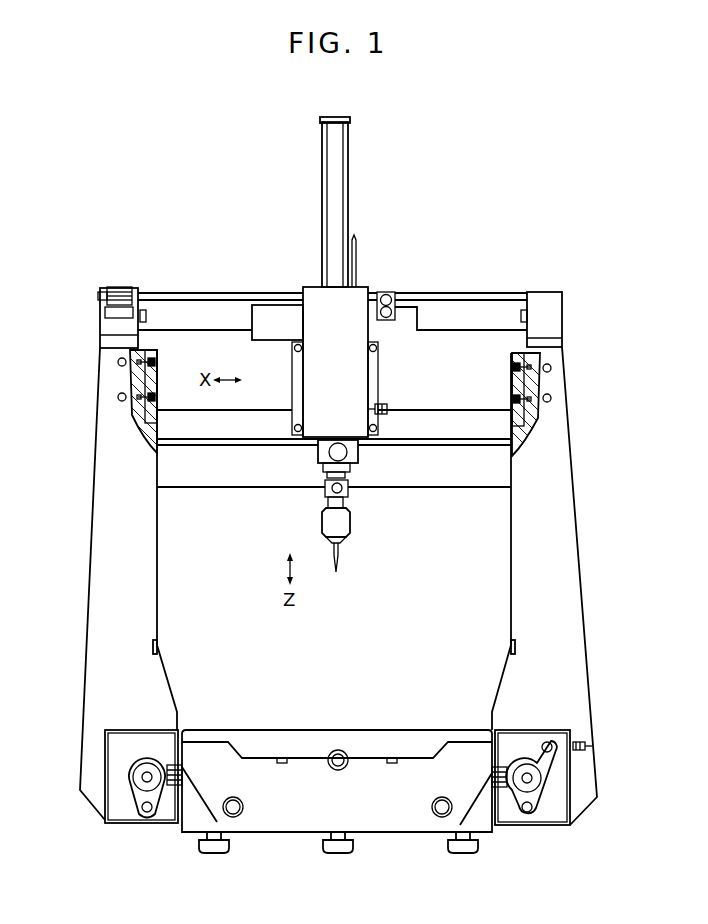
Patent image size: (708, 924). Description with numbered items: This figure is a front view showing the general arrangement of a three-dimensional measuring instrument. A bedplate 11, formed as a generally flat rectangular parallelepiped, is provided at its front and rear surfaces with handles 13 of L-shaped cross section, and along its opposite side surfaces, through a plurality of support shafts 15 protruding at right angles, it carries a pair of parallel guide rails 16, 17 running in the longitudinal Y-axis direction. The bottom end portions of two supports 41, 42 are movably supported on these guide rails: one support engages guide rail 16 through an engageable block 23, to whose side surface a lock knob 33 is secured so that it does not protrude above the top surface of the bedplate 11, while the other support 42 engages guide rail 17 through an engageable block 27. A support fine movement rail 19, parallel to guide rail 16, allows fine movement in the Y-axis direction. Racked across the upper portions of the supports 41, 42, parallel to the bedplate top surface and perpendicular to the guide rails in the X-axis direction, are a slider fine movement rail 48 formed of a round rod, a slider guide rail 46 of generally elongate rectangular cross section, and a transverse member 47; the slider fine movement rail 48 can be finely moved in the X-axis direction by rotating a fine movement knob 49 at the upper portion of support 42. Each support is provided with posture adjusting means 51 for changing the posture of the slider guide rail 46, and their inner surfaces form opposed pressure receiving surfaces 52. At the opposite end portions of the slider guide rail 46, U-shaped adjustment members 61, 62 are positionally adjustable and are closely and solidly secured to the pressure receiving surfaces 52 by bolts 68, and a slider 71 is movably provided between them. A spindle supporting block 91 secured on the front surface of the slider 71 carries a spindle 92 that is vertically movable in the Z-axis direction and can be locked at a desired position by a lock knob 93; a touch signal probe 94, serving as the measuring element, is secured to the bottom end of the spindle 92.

The bedplate 11 is at (352, 730).
The handles 13 is at (400, 815).
The support shafts 15 is at (180, 768).
The guide rail 16 is at (540, 785).
The guide rail 17 is at (140, 787).
The support fine movement rail 19 is at (547, 741).
The engageable block 23 is at (560, 788).
The engageable block 27 is at (112, 770).
The lock knob 33 is at (591, 746).
The support 41 is at (582, 612).
The support 42 is at (92, 587).
The slider guide rail 46 is at (440, 340).
The transverse member 47 is at (432, 472).
The slider fine movement rail 48 is at (493, 297).
The fine movement knob 49 is at (118, 290).
The posture adjusting means 51 is at (78, 352).
The pressure receiving surfaces 52 is at (136, 411).
The adjustment member 61 is at (513, 383).
The adjustment member 62 is at (156, 381).
The bolts 68 is at (155, 362).
The slider 71 is at (270, 318).
The spindle supporting block 91 is at (350, 353).
The spindle 92 is at (350, 181).
The lock knob 93 is at (381, 405).
The touch signal probe 94 is at (350, 522).